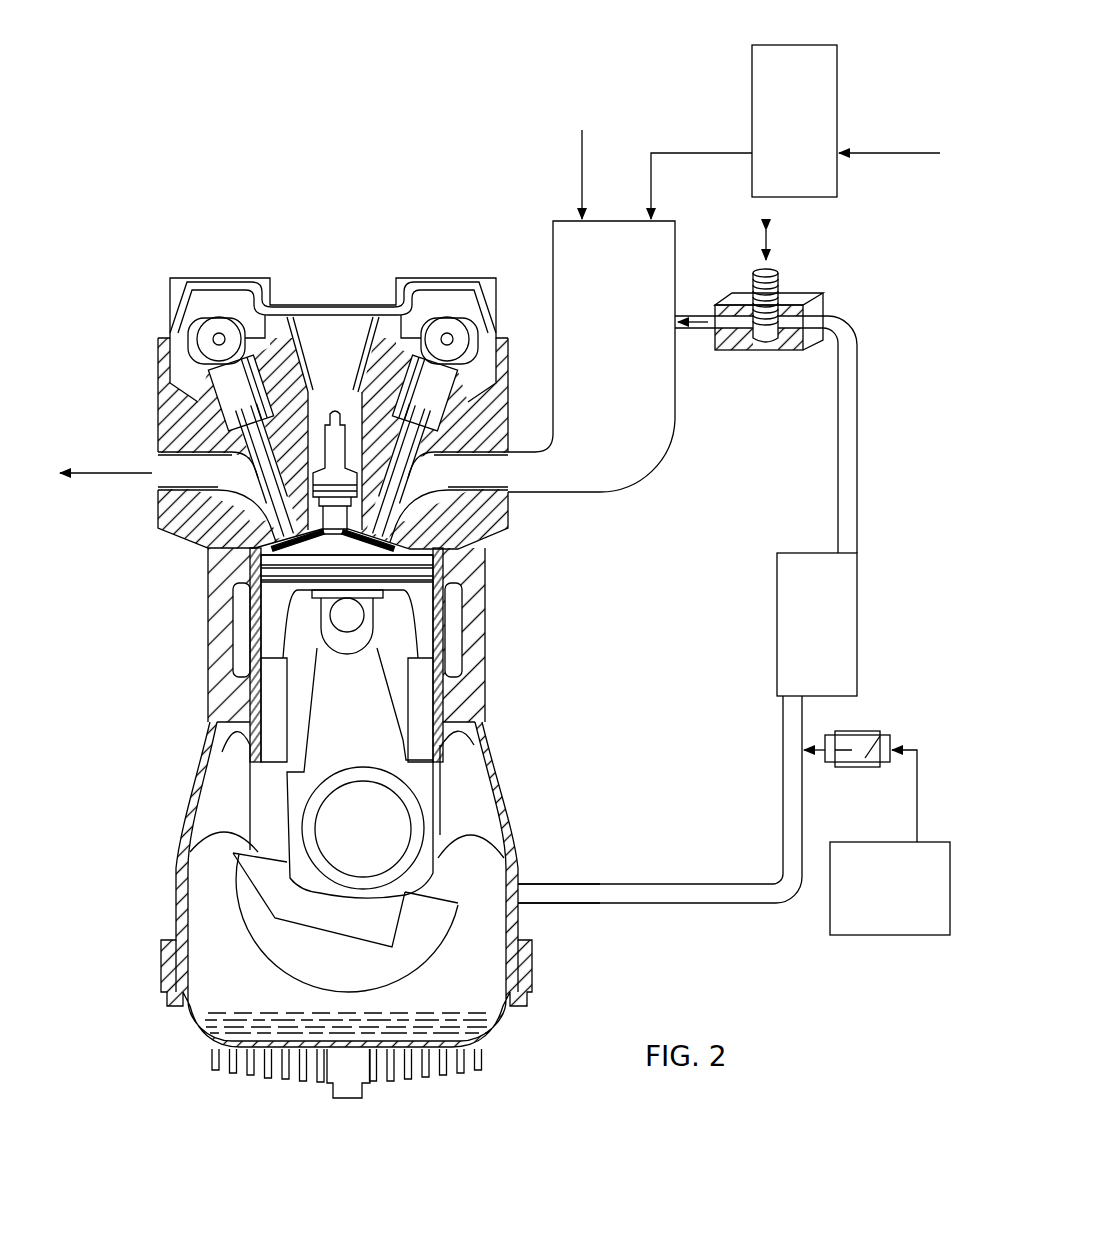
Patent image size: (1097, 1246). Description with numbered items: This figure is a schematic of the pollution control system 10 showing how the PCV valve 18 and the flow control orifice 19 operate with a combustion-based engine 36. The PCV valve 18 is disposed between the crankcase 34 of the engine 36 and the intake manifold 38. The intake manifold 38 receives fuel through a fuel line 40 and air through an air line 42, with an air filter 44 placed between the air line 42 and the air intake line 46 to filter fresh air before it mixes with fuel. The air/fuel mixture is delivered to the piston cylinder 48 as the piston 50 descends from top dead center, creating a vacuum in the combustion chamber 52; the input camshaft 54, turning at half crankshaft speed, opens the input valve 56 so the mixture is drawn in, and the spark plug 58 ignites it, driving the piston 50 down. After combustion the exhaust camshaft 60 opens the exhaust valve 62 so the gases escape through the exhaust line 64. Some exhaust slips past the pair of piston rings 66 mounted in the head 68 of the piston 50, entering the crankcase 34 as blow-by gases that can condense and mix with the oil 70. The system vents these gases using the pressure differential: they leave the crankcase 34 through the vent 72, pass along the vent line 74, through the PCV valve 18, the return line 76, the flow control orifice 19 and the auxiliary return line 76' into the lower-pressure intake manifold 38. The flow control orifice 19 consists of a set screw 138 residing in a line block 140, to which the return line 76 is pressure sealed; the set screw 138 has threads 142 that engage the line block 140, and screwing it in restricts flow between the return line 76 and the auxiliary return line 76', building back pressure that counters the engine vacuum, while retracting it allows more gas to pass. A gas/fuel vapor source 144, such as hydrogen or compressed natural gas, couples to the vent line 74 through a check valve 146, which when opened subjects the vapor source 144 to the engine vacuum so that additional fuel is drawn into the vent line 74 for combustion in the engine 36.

The pollution control system 10 is at (272, 208).
The PCV valve 18 is at (777, 617).
The flow control orifice 19 is at (752, 364).
The crankcase 34 is at (380, 823).
The engine 36 is at (208, 540).
The intake manifold 38 is at (675, 273).
The fuel line 40 is at (582, 164).
The air line 42 is at (651, 188).
The air filter 44 is at (823, 44).
The air intake line 46 is at (892, 154).
The piston cylinder 48 is at (250, 612).
The piston 50 is at (267, 645).
The combustion chamber 52 is at (295, 554).
The input camshaft 54 is at (468, 320).
The input valve 56 is at (447, 493).
The spark plug 58 is at (335, 410).
The exhaust camshaft 60 is at (193, 322).
The exhaust valve 62 is at (190, 535).
The exhaust line 64 is at (126, 472).
The piston rings 66 is at (432, 566).
The head 68 is at (425, 574).
The oil 70 is at (240, 1023).
The vent 72 is at (505, 898).
The vent line 74 is at (782, 797).
The return line 76 is at (868, 434).
The auxiliary return line 76' is at (751, 291).
The set screw 138 is at (770, 277).
The line block 140 is at (813, 343).
The threads 142 is at (770, 292).
The gas/fuel vapor source 144 is at (828, 912).
The check valve 146 is at (870, 728).